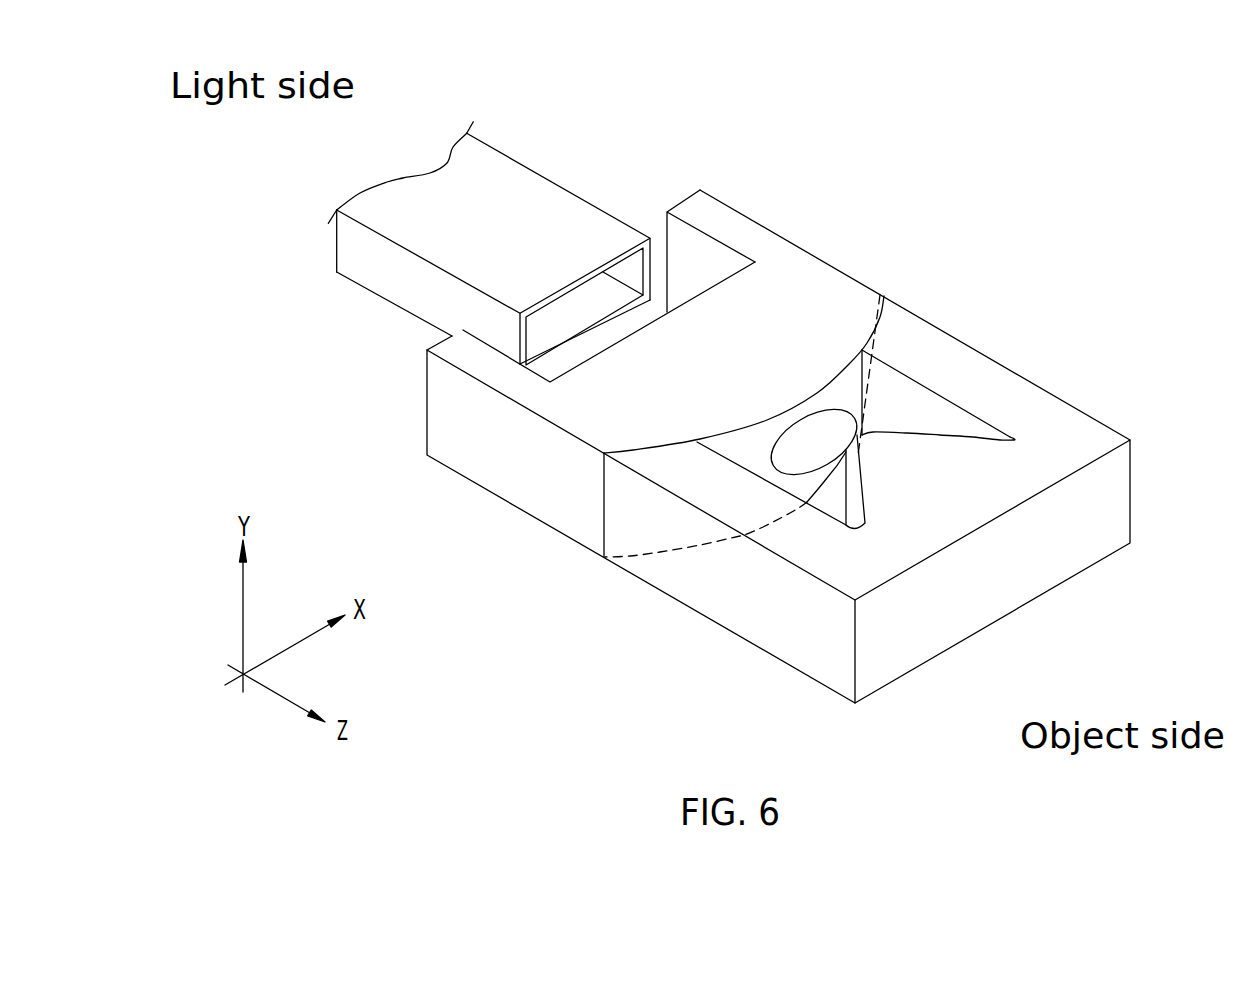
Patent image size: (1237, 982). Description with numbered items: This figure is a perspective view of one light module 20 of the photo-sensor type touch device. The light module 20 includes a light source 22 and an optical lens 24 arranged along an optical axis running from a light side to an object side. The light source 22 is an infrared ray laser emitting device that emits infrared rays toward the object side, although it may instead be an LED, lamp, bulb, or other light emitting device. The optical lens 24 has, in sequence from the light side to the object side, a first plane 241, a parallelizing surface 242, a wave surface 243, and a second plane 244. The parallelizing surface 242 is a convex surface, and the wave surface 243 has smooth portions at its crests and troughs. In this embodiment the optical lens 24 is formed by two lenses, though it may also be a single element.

The light module 20 is at (1157, 166).
The light source 22 is at (570, 212).
The optical lens 24 is at (845, 310).
The first plane 241 is at (722, 282).
The parallelizing surface 242 is at (848, 398).
The wave surface 243 is at (984, 437).
The second plane 244 is at (1069, 546).